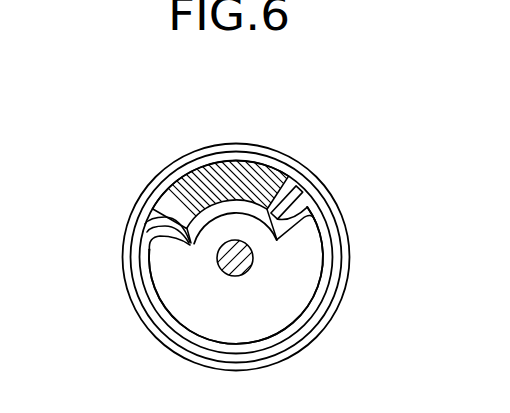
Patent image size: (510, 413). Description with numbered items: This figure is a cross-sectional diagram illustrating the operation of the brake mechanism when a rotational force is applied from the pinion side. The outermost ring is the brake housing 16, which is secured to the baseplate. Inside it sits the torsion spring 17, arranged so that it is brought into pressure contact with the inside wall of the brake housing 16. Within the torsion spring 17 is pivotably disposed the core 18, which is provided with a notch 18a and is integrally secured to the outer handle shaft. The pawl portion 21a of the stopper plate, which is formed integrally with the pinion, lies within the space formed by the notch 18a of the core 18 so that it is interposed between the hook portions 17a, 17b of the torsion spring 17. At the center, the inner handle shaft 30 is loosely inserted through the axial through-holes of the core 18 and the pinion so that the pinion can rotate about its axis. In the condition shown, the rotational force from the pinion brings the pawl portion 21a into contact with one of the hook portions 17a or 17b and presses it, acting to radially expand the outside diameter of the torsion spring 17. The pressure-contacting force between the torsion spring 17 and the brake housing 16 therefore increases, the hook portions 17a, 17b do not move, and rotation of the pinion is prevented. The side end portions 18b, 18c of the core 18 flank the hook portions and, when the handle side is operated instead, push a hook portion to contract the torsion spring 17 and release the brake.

The brake housing 16 is at (317, 175).
The torsion spring 17 is at (333, 252).
The hook portion 17a is at (148, 217).
The hook portion 17b is at (300, 207).
The core 18 is at (163, 288).
The notch 18a is at (233, 213).
The side end portion 18b is at (155, 237).
The side end portion 18c is at (287, 208).
The pawl portion 21a is at (188, 187).
The inner handle shaft 30 is at (252, 266).